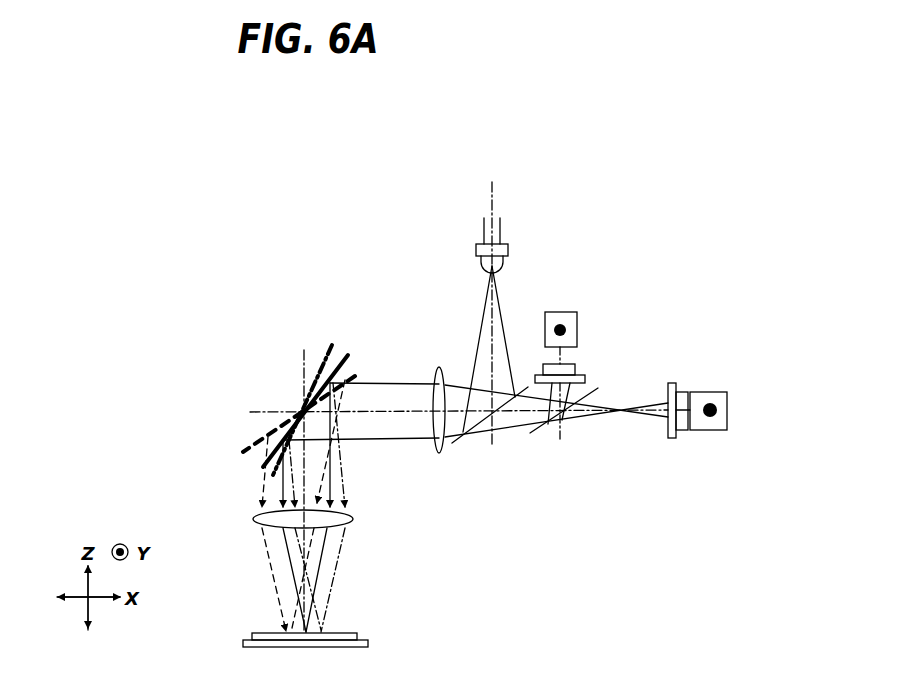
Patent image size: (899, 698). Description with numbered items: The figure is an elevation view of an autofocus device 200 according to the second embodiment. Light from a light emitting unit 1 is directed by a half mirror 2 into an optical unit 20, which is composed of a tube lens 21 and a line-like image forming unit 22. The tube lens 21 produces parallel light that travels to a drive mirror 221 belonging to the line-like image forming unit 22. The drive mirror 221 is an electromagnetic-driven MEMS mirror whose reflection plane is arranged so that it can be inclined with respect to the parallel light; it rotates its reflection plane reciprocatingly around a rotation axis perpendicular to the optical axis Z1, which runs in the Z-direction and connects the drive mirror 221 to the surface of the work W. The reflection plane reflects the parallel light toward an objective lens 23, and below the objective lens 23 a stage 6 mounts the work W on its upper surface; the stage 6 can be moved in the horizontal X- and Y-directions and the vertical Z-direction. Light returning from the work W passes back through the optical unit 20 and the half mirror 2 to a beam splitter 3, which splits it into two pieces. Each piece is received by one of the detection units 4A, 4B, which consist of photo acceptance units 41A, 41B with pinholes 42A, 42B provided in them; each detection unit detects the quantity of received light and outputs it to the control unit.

The autofocus device 200 is at (387, 157).
The light emitting unit 1 is at (508, 249).
The half mirror 2 is at (470, 432).
The beam splitter 3 is at (532, 432).
The detection unit 4A is at (575, 276).
The photo acceptance unit 41A is at (578, 325).
The pinhole 42A is at (587, 376).
The detection unit 4B is at (650, 322).
The photo acceptance unit 41B is at (702, 392).
The pinhole 42B is at (672, 383).
The optical unit 20 is at (308, 440).
The tube lens 21 is at (437, 366).
The line-like image forming unit 22 is at (292, 312).
The drive mirror 221 is at (344, 352).
The optical axis Z1 is at (302, 368).
The objective lens 23 is at (254, 521).
The work W is at (259, 633).
The stage 6 is at (243, 642).